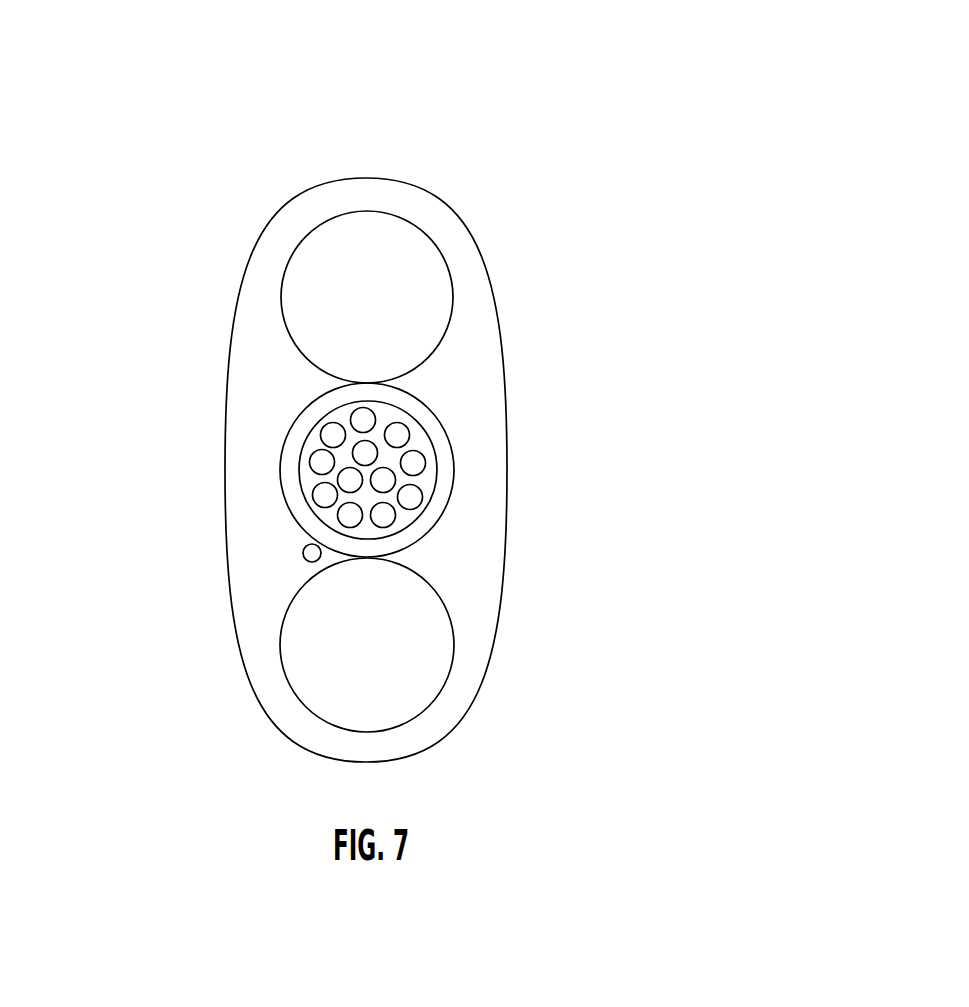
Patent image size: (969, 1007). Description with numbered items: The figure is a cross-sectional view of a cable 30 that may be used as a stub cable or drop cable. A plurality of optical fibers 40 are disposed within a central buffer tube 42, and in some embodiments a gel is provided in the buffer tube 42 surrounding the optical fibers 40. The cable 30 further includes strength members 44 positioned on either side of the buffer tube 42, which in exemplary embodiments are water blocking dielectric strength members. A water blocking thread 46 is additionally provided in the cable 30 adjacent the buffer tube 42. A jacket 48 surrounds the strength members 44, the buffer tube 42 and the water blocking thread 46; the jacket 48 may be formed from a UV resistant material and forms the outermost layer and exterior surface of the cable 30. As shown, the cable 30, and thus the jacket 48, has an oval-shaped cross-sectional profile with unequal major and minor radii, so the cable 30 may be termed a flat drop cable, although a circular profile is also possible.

The cable 30 is at (575, 158).
The optical fibers 40 is at (315, 516).
The buffer tube 42 is at (298, 399).
The strength members 44 is at (356, 296).
The water blocking thread 46 is at (289, 573).
The jacket 48 is at (289, 194).